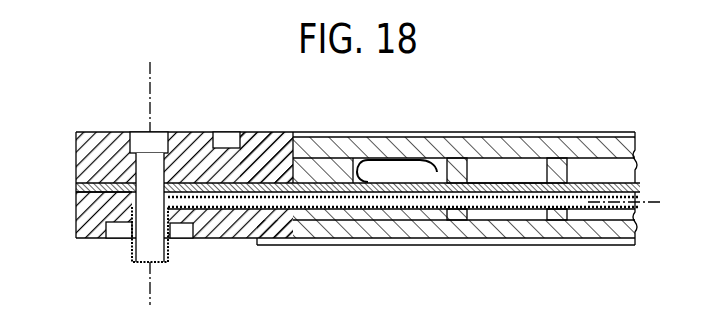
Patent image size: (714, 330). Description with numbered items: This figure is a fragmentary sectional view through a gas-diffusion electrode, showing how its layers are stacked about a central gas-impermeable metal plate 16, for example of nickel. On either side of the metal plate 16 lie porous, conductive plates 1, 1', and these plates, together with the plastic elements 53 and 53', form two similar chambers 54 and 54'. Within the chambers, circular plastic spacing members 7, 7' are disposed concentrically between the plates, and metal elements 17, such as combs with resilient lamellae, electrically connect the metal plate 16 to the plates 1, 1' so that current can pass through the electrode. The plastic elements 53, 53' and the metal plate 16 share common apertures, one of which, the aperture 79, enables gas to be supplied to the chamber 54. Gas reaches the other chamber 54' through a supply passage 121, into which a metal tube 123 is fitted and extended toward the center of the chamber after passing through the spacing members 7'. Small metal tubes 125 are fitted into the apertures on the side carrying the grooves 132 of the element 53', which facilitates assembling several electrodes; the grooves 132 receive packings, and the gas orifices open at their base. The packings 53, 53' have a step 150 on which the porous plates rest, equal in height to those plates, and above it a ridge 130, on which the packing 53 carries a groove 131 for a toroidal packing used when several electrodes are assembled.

The plate 1 is at (464, 109).
The plate 1' is at (446, 265).
The circular spacing member 7 is at (465, 129).
The circular spacing member 7' is at (465, 242).
The gas-impermeable metal plate 16 is at (520, 183).
The metal element 17 is at (428, 157).
The plastic element 53 is at (343, 157).
The plastic element 53' is at (162, 242).
The chamber 54 is at (473, 129).
The chamber 54' is at (507, 251).
The aperture 79 is at (137, 131).
The supply passage 121 is at (188, 181).
The metal tube 123 is at (398, 213).
The small metal tube 125 is at (167, 245).
The ridge 130 is at (290, 131).
The groove 131 is at (231, 131).
The groove 132 is at (119, 237).
The step 150 is at (333, 157).